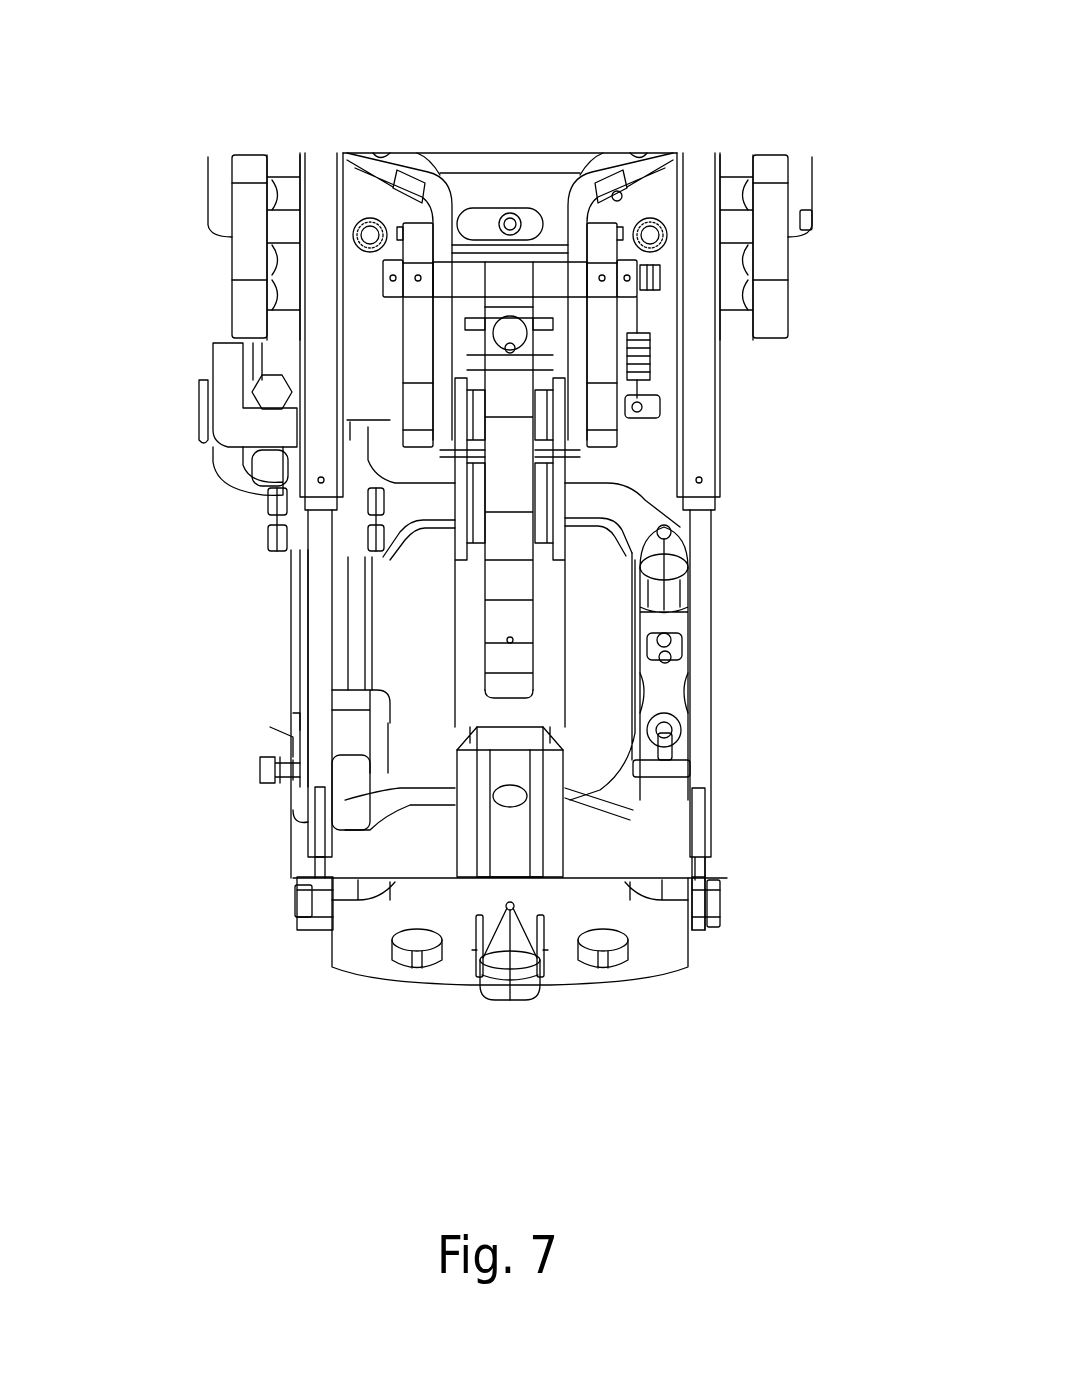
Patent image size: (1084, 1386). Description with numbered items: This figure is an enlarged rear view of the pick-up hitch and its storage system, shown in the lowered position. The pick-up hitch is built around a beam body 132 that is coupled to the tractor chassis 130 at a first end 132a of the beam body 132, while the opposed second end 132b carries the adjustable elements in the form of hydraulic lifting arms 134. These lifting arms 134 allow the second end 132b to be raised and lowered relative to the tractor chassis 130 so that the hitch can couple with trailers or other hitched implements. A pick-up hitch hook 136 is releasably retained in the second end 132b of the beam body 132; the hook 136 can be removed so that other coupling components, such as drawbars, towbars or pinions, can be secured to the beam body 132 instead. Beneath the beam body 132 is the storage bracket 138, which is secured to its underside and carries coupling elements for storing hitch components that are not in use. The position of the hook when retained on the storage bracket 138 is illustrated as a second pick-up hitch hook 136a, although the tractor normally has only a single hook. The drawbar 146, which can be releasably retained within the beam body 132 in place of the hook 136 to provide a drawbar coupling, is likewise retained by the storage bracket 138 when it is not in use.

The tractor chassis 130 is at (667, 207).
The beam body 132 is at (545, 702).
The first end 132a is at (171, 309).
The second end 132b is at (322, 1048).
The hydraulic lifting arms 134 is at (315, 583).
The pick-up hitch hook 136 is at (508, 988).
The second pick-up hitch hook 136a is at (662, 685).
The storage bracket 138 is at (615, 780).
The drawbar 146 is at (347, 653).